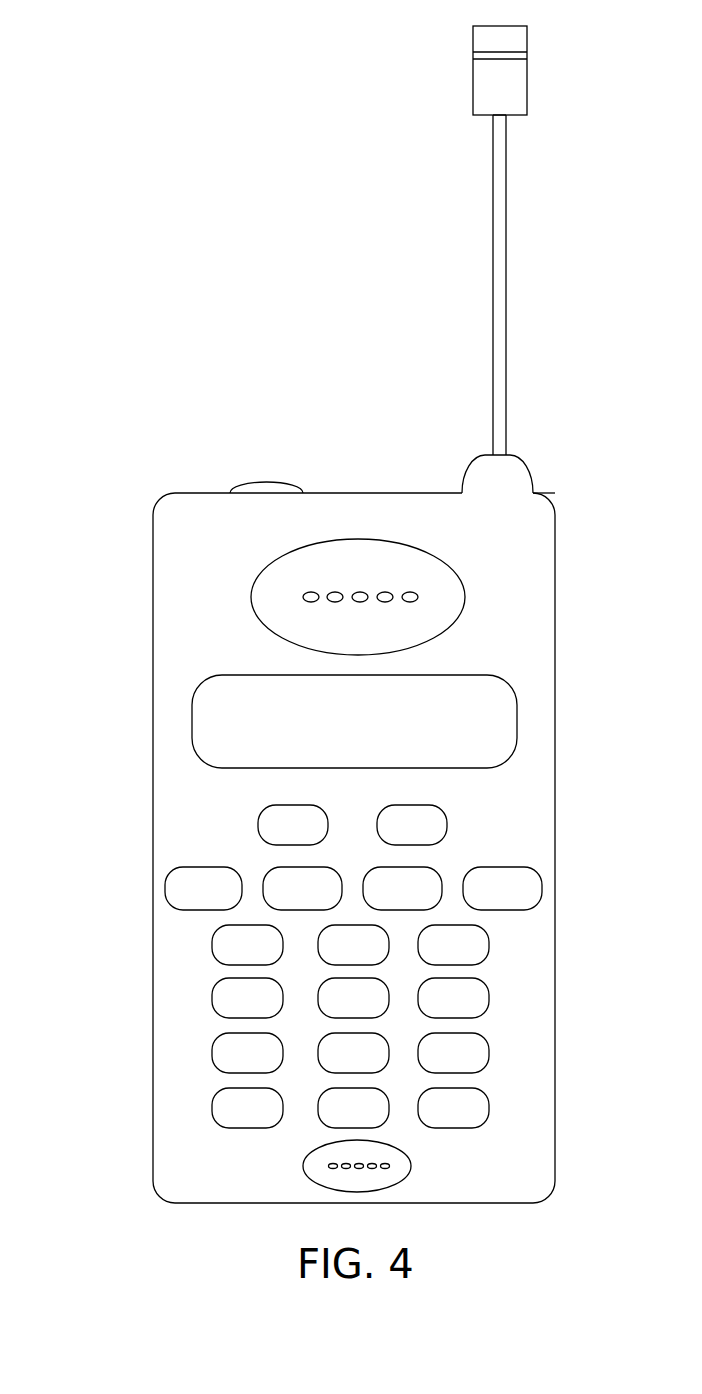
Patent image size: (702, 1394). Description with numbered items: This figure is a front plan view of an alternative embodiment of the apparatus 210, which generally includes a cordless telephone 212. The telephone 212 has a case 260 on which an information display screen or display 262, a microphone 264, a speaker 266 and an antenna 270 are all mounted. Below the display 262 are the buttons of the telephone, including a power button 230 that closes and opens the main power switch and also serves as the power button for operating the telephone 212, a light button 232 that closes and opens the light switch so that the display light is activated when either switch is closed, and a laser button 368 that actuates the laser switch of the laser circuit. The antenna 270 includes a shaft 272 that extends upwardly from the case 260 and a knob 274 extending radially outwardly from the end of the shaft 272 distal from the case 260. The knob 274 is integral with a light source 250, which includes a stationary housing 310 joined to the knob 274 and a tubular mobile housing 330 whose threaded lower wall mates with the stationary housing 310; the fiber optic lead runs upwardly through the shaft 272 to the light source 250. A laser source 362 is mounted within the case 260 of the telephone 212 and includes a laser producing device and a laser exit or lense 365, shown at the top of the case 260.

The apparatus 210 is at (228, 268).
The cordless telephone 212 is at (153, 558).
The power button 230 is at (165, 888).
The light button 232 is at (542, 893).
The light source 250 is at (473, 82).
The case 260 is at (168, 619).
The information display screen 262 is at (192, 732).
The microphone 264 is at (303, 1165).
The speaker 266 is at (283, 553).
The antenna 270 is at (493, 270).
The shaft 272 is at (502, 241).
The knob 274 is at (508, 107).
The stationary housing 310 is at (512, 92).
The tubular mobile housing 330 is at (508, 43).
The laser source 362 is at (232, 490).
The laser exit or lense 365 is at (263, 488).
The laser button 368 is at (437, 870).